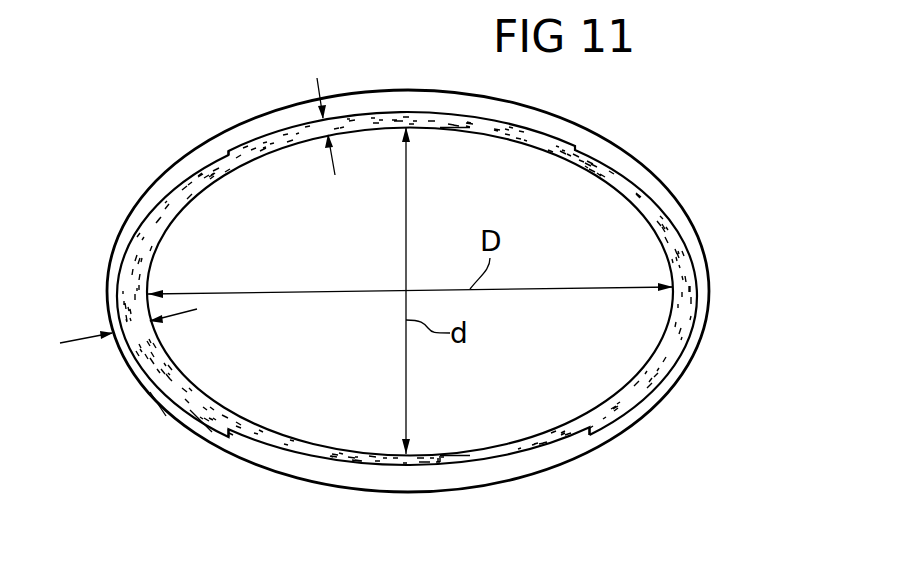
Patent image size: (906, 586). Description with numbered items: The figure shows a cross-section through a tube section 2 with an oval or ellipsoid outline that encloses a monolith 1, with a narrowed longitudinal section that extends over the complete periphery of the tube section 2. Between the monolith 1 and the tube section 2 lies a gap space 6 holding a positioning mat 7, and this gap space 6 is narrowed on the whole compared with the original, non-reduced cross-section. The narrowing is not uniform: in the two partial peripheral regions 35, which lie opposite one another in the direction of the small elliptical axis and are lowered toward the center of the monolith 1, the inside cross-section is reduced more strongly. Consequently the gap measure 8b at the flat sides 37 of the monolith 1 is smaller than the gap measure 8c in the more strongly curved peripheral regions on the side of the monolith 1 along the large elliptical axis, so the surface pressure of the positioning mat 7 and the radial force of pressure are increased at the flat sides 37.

The monolith 1 is at (642, 250).
The tube section 2 is at (405, 90).
The gap space 6 is at (157, 405).
The positioning mat 7 is at (200, 420).
The gap measure 8b is at (312, 148).
The gap measure 8c is at (117, 347).
The partial peripheral regions 35 is at (343, 113).
The flat sides 37 is at (452, 128).